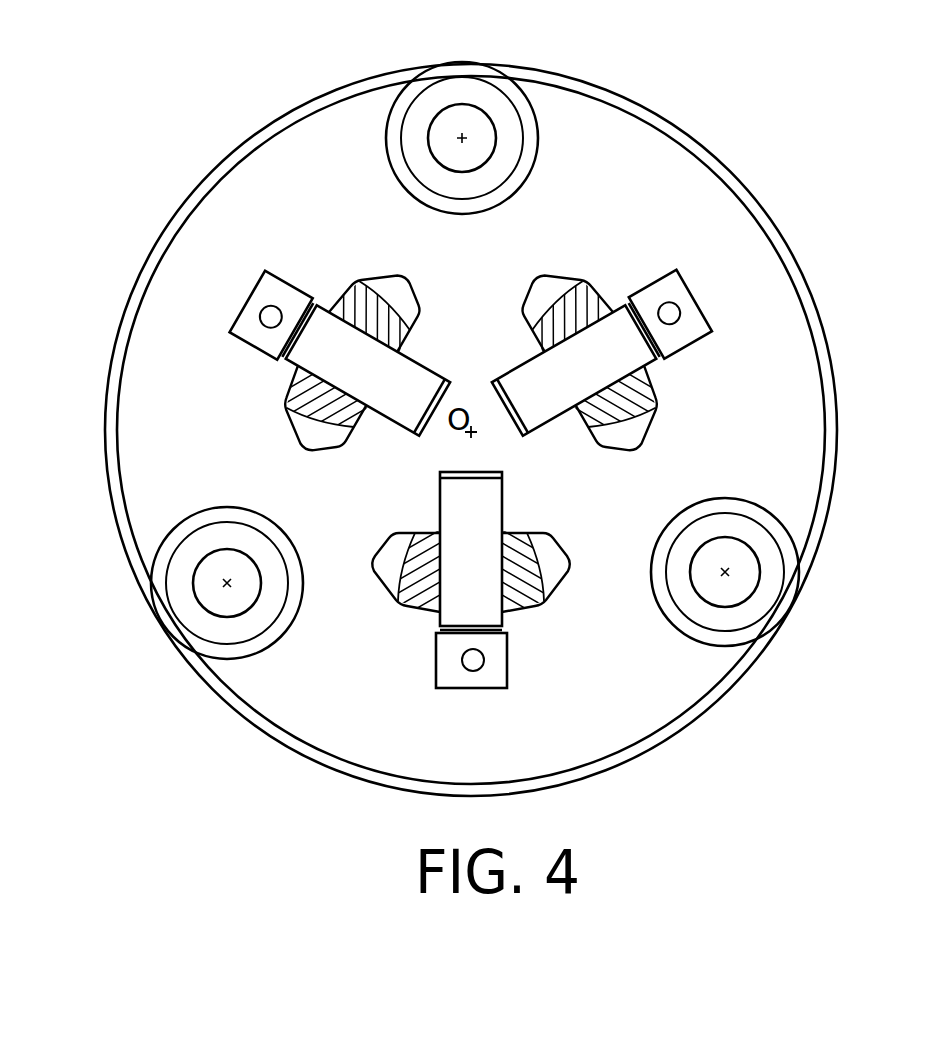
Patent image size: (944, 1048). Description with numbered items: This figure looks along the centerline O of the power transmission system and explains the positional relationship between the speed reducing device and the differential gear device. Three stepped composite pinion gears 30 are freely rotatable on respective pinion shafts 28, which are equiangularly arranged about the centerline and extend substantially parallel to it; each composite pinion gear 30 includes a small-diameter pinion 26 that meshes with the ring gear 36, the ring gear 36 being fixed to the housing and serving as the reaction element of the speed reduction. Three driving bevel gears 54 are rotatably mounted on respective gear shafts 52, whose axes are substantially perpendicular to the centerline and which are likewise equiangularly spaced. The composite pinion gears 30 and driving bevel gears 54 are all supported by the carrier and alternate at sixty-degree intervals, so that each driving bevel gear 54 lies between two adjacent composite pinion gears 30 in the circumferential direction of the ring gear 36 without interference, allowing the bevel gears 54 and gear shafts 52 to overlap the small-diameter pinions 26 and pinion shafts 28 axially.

The small-diameter pinion 26 is at (198, 543).
The pinion shaft 28 is at (485, 132).
The stepped composite pinion gear 30 is at (362, 123).
The ring gear 36 is at (630, 752).
The gear shaft 52 is at (307, 352).
The driving bevel gear 54 is at (353, 303).